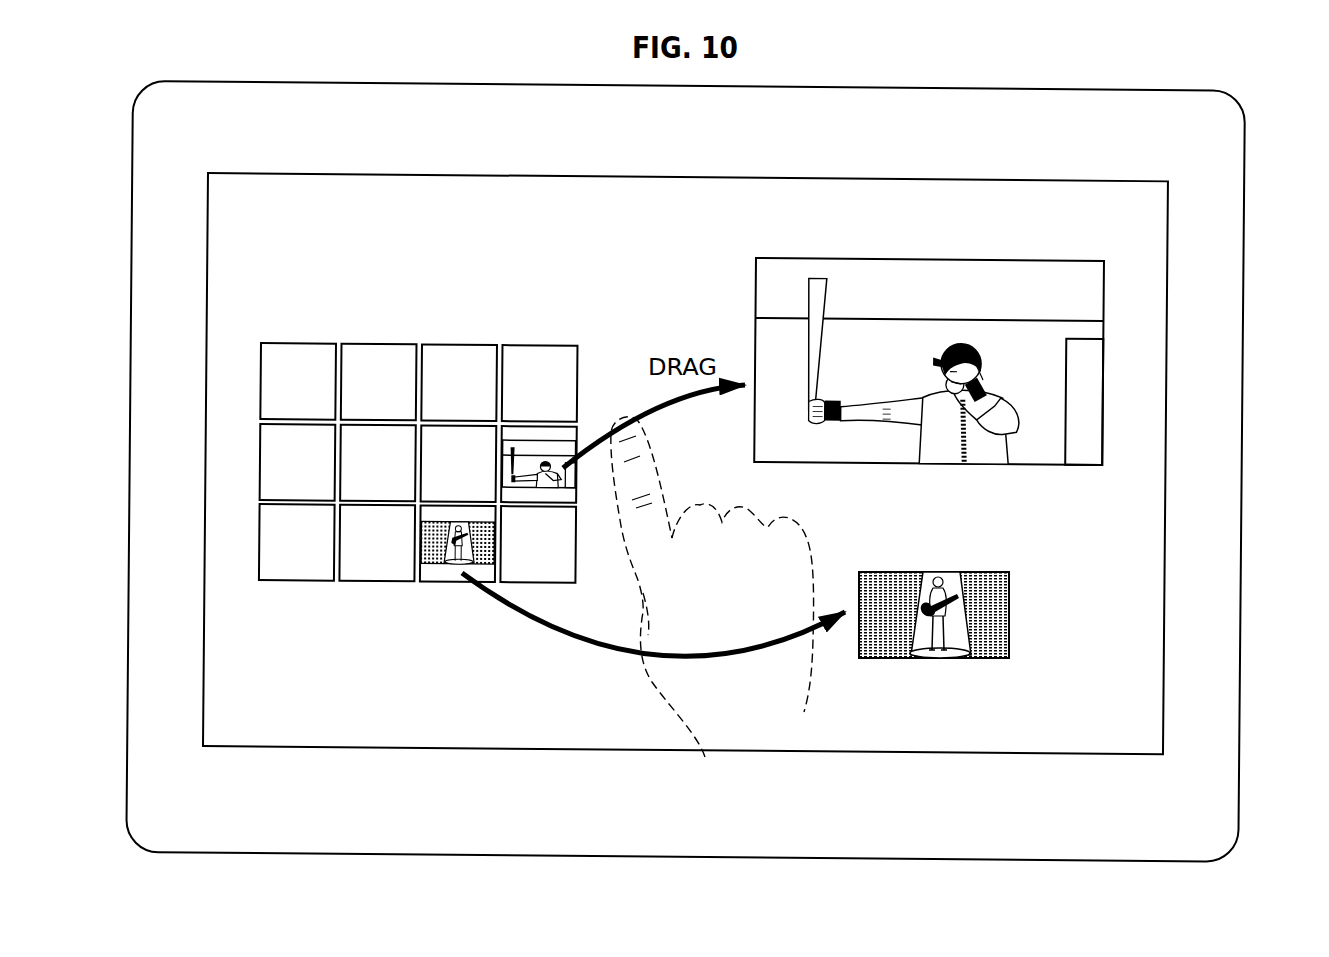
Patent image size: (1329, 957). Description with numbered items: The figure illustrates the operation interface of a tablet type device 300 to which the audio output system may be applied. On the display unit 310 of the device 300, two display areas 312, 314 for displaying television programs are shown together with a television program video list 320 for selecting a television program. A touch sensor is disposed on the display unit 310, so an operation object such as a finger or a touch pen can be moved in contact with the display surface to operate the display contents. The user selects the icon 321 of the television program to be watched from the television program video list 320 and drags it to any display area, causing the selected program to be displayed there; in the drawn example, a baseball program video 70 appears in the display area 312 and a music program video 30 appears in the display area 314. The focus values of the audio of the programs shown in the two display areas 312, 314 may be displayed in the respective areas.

The tablet type device 300 is at (1045, 90).
The display unit 310 is at (1132, 230).
The display area 312 is at (1036, 344).
The display area 314 is at (1088, 597).
The television program video list 320 is at (316, 442).
The icon 321 is at (261, 381).
The baseball program video 70 is at (929, 344).
The music program video 30 is at (934, 597).